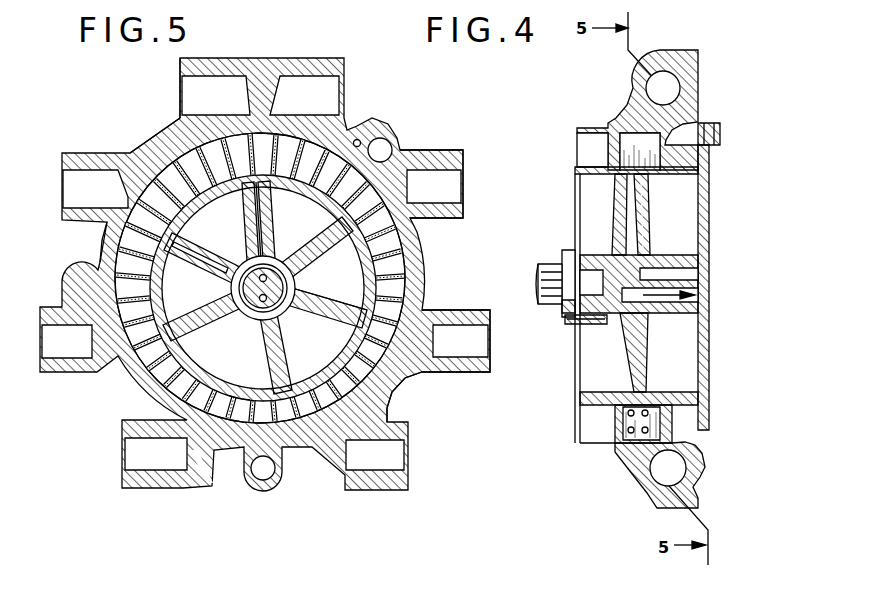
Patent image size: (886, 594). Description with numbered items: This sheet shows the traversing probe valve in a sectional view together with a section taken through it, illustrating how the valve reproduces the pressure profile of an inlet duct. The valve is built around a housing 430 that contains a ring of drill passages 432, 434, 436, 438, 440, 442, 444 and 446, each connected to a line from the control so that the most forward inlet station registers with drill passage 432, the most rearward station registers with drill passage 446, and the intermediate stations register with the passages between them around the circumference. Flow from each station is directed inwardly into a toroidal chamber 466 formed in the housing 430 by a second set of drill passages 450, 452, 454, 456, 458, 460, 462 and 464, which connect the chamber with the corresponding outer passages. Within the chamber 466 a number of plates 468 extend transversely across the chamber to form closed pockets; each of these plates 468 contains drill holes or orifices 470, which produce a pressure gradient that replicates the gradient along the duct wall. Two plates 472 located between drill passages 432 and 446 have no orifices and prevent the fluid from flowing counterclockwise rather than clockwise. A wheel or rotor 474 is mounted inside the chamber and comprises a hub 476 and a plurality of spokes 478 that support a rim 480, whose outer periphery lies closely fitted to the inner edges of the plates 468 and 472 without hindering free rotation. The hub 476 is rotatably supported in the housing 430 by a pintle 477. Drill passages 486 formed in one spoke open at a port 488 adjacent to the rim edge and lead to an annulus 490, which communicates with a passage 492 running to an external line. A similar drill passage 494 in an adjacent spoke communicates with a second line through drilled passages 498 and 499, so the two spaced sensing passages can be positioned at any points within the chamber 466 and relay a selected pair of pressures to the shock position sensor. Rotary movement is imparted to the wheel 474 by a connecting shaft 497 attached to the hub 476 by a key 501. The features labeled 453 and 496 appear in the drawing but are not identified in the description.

In FIG. 5, the housing 430 is at (296, 60).
In FIG. 4, the housing 430 is at (627, 103).
In FIG. 5, the drill passage 432 is at (346, 112).
In FIG. 4, the drill passage 432 is at (682, 82).
In FIG. 5, the drill passage 434 is at (460, 203).
In FIG. 5, the drill passage 436 is at (477, 354).
In FIG. 4, the drill passage 438 is at (650, 480).
In FIG. 5, the drill passage 440 is at (128, 466).
In FIG. 5, the drill passage 442 is at (46, 362).
In FIG. 5, the drill passage 444 is at (62, 168).
In FIG. 5, the drill passage 446 is at (186, 112).
In FIG. 5, the drill passage 450 is at (287, 110).
In FIG. 5, the drill passage 452 is at (406, 200).
In FIG. 5, the bottom boss 453 is at (205, 453).
In FIG. 5, the drill passage 454 is at (422, 312).
In FIG. 5, the drill passage 456 is at (389, 420).
In FIG. 5, the drill passage 458 is at (404, 467).
In FIG. 5, the drill passage 460 is at (112, 365).
In FIG. 5, the drill passage 462 is at (152, 152).
In FIG. 5, the drill passage 464 is at (242, 115).
In FIG. 5, the chamber 466 is at (150, 300).
In FIG. 4, the chamber 466 is at (612, 128).
In FIG. 4, the plates 468 is at (615, 421).
In FIG. 5, the drill holes or orifices 470 is at (424, 238).
In FIG. 4, the drill holes or orifices 470 is at (650, 400).
In FIG. 5, the plates 472 is at (259, 193).
In FIG. 5, the wheel or rotor 474 is at (309, 293).
In FIG. 5, the hub 476 is at (250, 326).
In FIG. 4, the hub 476 is at (657, 250).
In FIG. 4, the pintle 477 is at (590, 278).
In FIG. 5, the spokes 478 is at (327, 324).
In FIG. 5, the rim 480 is at (227, 393).
In FIG. 5, the drill passages 486 is at (257, 208).
In FIG. 5, the port 488 is at (246, 181).
In FIG. 5, the annulus 490 is at (259, 260).
In FIG. 5, the passage 492 is at (235, 252).
In FIG. 4, the passage 492 is at (700, 268).
In FIG. 5, the drill passage 494 is at (167, 262).
In FIG. 4, the hub block 496 is at (603, 262).
In FIG. 4, the connecting shaft 497 is at (546, 278).
In FIG. 4, the drilled passage 498 is at (558, 314).
In FIG. 5, the drilled passage 499 is at (340, 318).
In FIG. 4, the drilled passage 499 is at (708, 300).
In FIG. 4, the key 501 is at (597, 326).